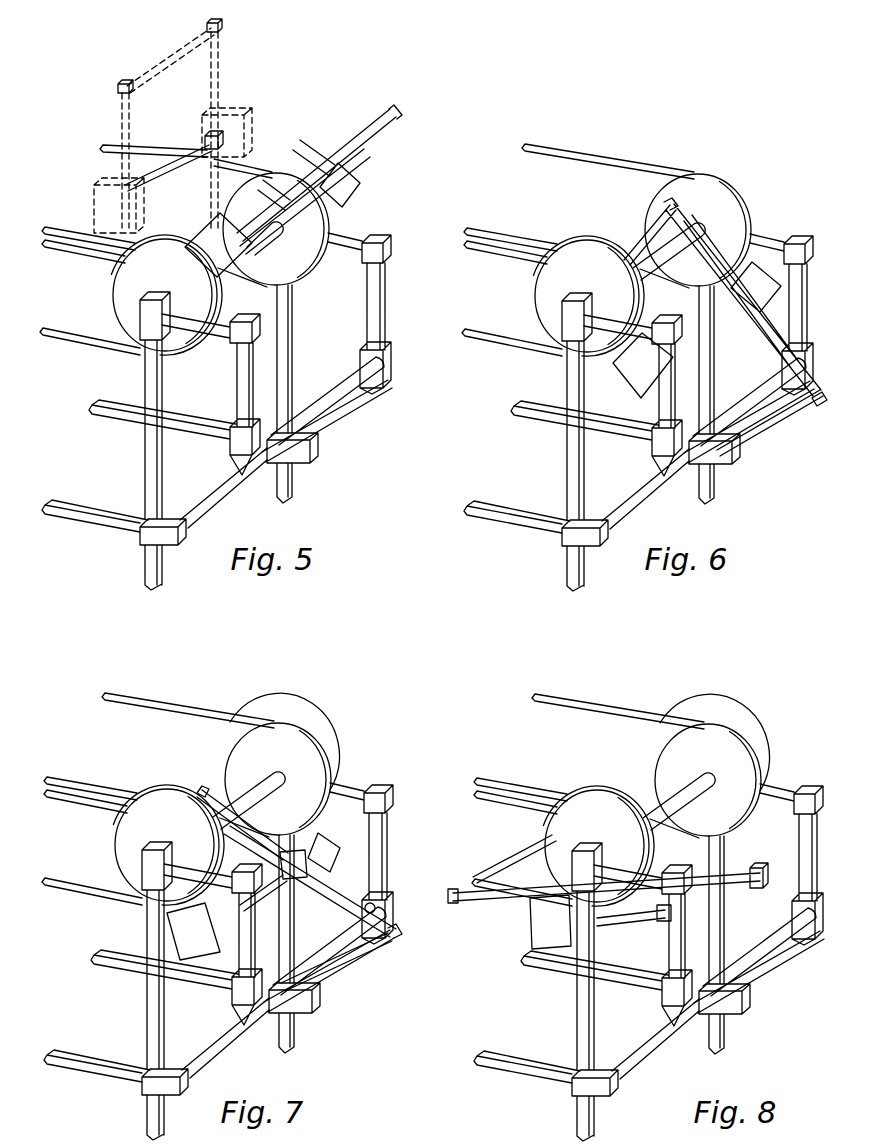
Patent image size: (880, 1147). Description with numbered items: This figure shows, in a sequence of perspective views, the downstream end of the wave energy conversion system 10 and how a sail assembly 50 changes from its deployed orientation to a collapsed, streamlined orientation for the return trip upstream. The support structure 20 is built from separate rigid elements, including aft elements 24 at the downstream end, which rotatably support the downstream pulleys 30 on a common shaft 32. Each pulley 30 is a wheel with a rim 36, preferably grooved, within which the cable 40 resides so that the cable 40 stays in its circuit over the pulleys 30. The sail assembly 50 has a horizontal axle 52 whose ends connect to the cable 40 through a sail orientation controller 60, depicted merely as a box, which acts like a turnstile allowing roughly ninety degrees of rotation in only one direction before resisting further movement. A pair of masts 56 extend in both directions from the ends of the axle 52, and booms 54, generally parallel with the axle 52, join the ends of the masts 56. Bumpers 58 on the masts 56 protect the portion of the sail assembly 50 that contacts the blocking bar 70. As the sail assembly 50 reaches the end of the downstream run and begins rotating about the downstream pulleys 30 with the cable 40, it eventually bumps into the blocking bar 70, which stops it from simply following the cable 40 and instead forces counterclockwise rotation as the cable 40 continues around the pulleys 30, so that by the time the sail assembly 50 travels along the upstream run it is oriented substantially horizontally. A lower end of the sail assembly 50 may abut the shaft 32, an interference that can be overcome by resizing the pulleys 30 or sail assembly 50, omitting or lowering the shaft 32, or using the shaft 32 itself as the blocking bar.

In FIG. 5, the wave energy conversion system 10 is at (381, 90).
In FIG. 6, the wave energy conversion system 10 is at (772, 143).
In FIG. 7, the wave energy conversion system 10 is at (307, 671).
In FIG. 8, the wave energy conversion system 10 is at (722, 670).
In FIG. 5, the support structure 20 is at (160, 540).
In FIG. 6, the support structure 20 is at (572, 540).
In FIG. 7, the support structure 20 is at (147, 1087).
In FIG. 8, the support structure 20 is at (575, 1087).
In FIG. 5, the aft elements 24 is at (292, 494).
In FIG. 6, the aft elements 24 is at (712, 488).
In FIG. 7, the aft elements 24 is at (292, 1028).
In FIG. 8, the aft elements 24 is at (722, 1028).
In FIG. 5, the pulleys 30 is at (114, 299).
In FIG. 6, the pulleys 30 is at (658, 194).
In FIG. 7, the pulleys 30 is at (243, 740).
In FIG. 8, the pulleys 30 is at (659, 750).
In FIG. 5, the shaft 32 is at (265, 238).
In FIG. 6, the shaft 32 is at (645, 268).
In FIG. 7, the shaft 32 is at (238, 778).
In FIG. 8, the shaft 32 is at (651, 786).
In FIG. 7, the rim 36 is at (290, 724).
In FIG. 8, the rim 36 is at (718, 725).
In FIG. 5, the cables 40 is at (106, 144).
In FIG. 6, the cables 40 is at (547, 142).
In FIG. 7, the cables 40 is at (132, 702).
In FIG. 8, the cables 40 is at (560, 703).
In FIG. 5, the sail assembly 50 is at (226, 66).
In FIG. 6, the sail assembly 50 is at (818, 398).
In FIG. 7, the sail assembly 50 is at (396, 933).
In FIG. 8, the sail assembly 50 is at (748, 868).
In FIG. 7, the axle 52 is at (268, 865).
In FIG. 7, the booms 54 is at (350, 948).
In FIG. 7, the masts 56 is at (348, 888).
In FIG. 7, the bumpers 58 is at (372, 904).
In FIG. 5, the sail orientation controller 60 is at (206, 258).
In FIG. 6, the sail orientation controller 60 is at (632, 373).
In FIG. 7, the sail orientation controller 60 is at (182, 944).
In FIG. 8, the sail orientation controller 60 is at (540, 929).
In FIG. 5, the blocking bar 70 is at (352, 370).
In FIG. 6, the blocking bar 70 is at (764, 372).
In FIG. 7, the blocking bar 70 is at (339, 930).
In FIG. 8, the blocking bar 70 is at (777, 921).